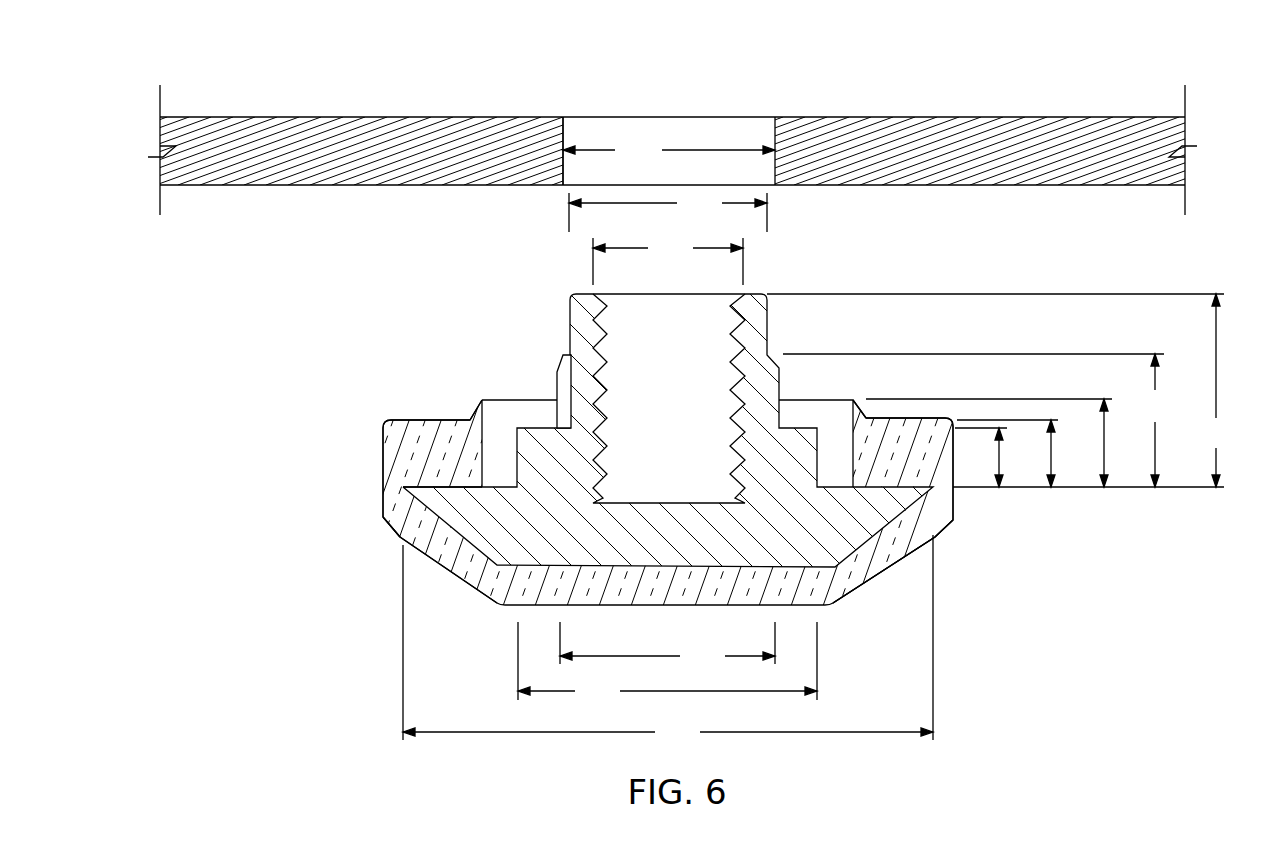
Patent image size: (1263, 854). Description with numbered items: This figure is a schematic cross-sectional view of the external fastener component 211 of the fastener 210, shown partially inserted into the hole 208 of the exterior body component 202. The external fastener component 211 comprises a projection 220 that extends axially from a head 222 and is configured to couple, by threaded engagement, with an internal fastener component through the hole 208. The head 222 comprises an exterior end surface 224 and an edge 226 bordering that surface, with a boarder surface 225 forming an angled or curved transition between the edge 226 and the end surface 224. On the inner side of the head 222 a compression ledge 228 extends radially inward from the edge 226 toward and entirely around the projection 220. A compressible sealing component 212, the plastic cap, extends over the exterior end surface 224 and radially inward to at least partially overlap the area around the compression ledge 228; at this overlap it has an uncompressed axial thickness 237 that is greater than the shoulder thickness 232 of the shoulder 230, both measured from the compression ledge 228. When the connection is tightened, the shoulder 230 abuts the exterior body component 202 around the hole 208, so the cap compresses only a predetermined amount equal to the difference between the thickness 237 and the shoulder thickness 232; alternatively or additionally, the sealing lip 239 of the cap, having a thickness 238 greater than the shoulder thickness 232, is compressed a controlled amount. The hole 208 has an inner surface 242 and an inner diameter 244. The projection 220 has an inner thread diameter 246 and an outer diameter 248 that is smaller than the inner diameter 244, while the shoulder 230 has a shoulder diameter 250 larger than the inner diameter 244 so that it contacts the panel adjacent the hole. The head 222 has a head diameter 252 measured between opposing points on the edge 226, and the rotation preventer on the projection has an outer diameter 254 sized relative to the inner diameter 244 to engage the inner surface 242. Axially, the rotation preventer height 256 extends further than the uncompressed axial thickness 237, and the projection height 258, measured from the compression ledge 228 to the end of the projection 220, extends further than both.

The exterior body component 202 is at (232, 132).
The hole 208 is at (742, 104).
The fastener 210 is at (305, 502).
The external fastener component 211 is at (965, 564).
The compressible sealing component 212 is at (397, 537).
The projection 220 is at (780, 319).
The head 222 is at (860, 532).
The exterior end surface 224 is at (492, 600).
The boarder surface 225 is at (467, 543).
The edge 226 is at (418, 483).
The compression ledge 228 is at (452, 478).
The shoulder 230 is at (546, 353).
The shoulder thickness 232 is at (1000, 454).
The uncompressed axial thickness 237 is at (1052, 454).
The thickness of the sealing lip 238 is at (1105, 454).
The sealing lip 239 is at (478, 399).
The inner surface 242 is at (563, 130).
The inner diameter 244 is at (669, 150).
The inner thread diameter 246 is at (668, 260).
The outer diameter 248 is at (668, 211).
The shoulder diameter 250 is at (667, 662).
The head diameter 252 is at (668, 639).
The outer diameter of rotation preventer 254 is at (667, 645).
The rotation preventer height 256 is at (978, 420).
The projection height 258 is at (1000, 390).